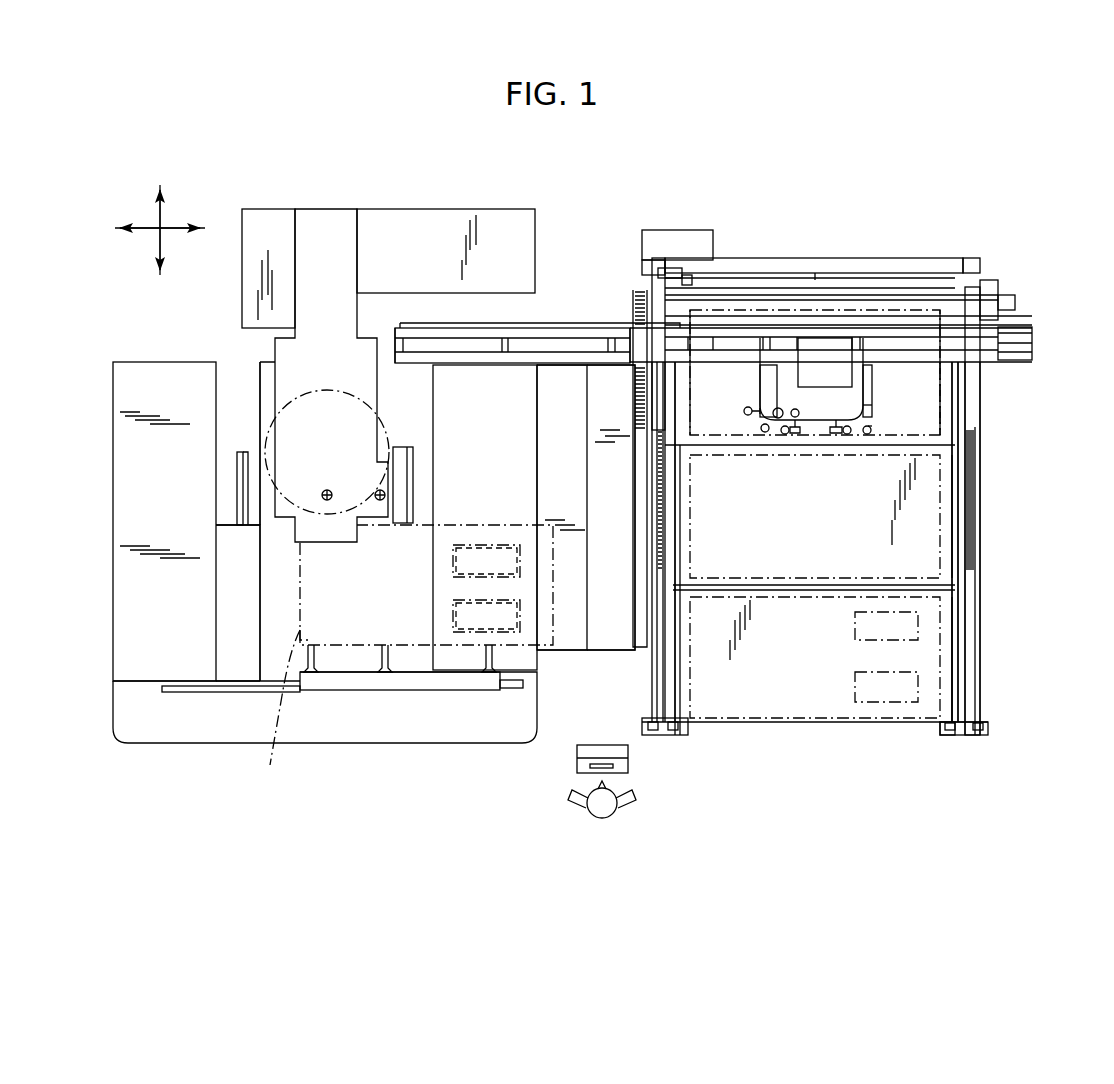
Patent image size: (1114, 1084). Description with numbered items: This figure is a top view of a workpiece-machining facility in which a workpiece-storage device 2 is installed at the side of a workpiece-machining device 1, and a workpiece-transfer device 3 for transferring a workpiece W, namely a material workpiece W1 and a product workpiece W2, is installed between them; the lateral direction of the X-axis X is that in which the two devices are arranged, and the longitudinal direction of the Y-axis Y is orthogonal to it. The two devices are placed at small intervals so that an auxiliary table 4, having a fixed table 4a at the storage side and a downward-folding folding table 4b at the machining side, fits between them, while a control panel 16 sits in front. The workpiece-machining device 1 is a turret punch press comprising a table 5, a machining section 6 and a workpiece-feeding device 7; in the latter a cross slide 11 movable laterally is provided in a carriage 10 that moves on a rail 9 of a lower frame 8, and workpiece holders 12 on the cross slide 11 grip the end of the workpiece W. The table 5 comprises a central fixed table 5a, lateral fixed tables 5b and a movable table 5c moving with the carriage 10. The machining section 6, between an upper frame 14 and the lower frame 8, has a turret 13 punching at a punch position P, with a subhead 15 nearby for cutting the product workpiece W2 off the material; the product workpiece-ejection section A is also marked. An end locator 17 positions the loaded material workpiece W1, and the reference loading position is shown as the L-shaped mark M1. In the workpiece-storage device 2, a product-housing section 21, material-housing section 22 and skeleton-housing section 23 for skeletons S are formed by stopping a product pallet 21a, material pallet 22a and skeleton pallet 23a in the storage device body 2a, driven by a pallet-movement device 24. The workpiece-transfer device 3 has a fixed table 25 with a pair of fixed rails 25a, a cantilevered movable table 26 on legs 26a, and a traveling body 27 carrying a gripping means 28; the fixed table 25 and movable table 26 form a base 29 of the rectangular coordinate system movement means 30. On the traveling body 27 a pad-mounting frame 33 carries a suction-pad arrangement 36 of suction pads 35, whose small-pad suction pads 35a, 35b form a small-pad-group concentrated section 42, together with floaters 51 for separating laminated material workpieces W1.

The workpiece-machining device 1 is at (162, 760).
The workpiece-storage device 2 is at (982, 745).
The workpiece-storage device body 2a is at (958, 730).
The workpiece-transfer device 3 is at (595, 322).
The auxiliary table 4 is at (565, 655).
The fixed table 4a is at (612, 635).
The folding table 4b is at (575, 640).
The table 5 is at (140, 385).
The central fixed table 5a is at (287, 582).
The fixed table 5b is at (150, 503).
The movable table 5c is at (240, 550).
The machining section 6 is at (303, 442).
The workpiece-feeding device 7 is at (352, 722).
The lower frame 8 is at (238, 457).
The rail 9 is at (238, 487).
The carriage 10 is at (225, 725).
The cross slide 11 is at (465, 680).
The workpiece holder 12 is at (380, 663).
The turret 13 is at (262, 392).
The upper frame 14 is at (322, 355).
The subhead 15 is at (380, 502).
The control panel 16 is at (298, 622).
The end locator 17 is at (298, 634).
The product-housing section 21 is at (815, 657).
The product pallet 21a is at (950, 673).
The material-housing section 22 is at (815, 516).
The material pallet 22a is at (945, 512).
The skeleton-housing section 23 is at (815, 372).
The skeleton pallet 23a is at (940, 400).
The pallet-movement device 24 is at (930, 262).
The fixed table 25 is at (980, 605).
The fixed rail 25a is at (977, 585).
The movable table 26 is at (568, 327).
The leg 26a is at (645, 395).
The traveling body 27 is at (835, 375).
The gripping means 28 is at (877, 414).
The base 29 is at (980, 640).
The rectangular coordinate system movement means 30 is at (977, 292).
The pad-mounting frame 33 is at (818, 420).
The suction pad 35 is at (868, 436).
The suction pad 35a is at (772, 410).
The suction pad 35b is at (748, 430).
The suction-pad arrangement 36 is at (877, 429).
The small-pad-group concentrated section 42 is at (778, 436).
The floater 51 is at (840, 434).
The product workpiece-ejection section A is at (380, 490).
The punch position P is at (327, 490).
The skeleton S is at (458, 530).
The workpiece W is at (512, 655).
The material workpiece W1 is at (490, 524).
The product workpiece W2 is at (497, 560).
The L-shaped mark M1 is at (276, 712).
The X-axis X is at (169, 231).
The Y-axis Y is at (158, 217).